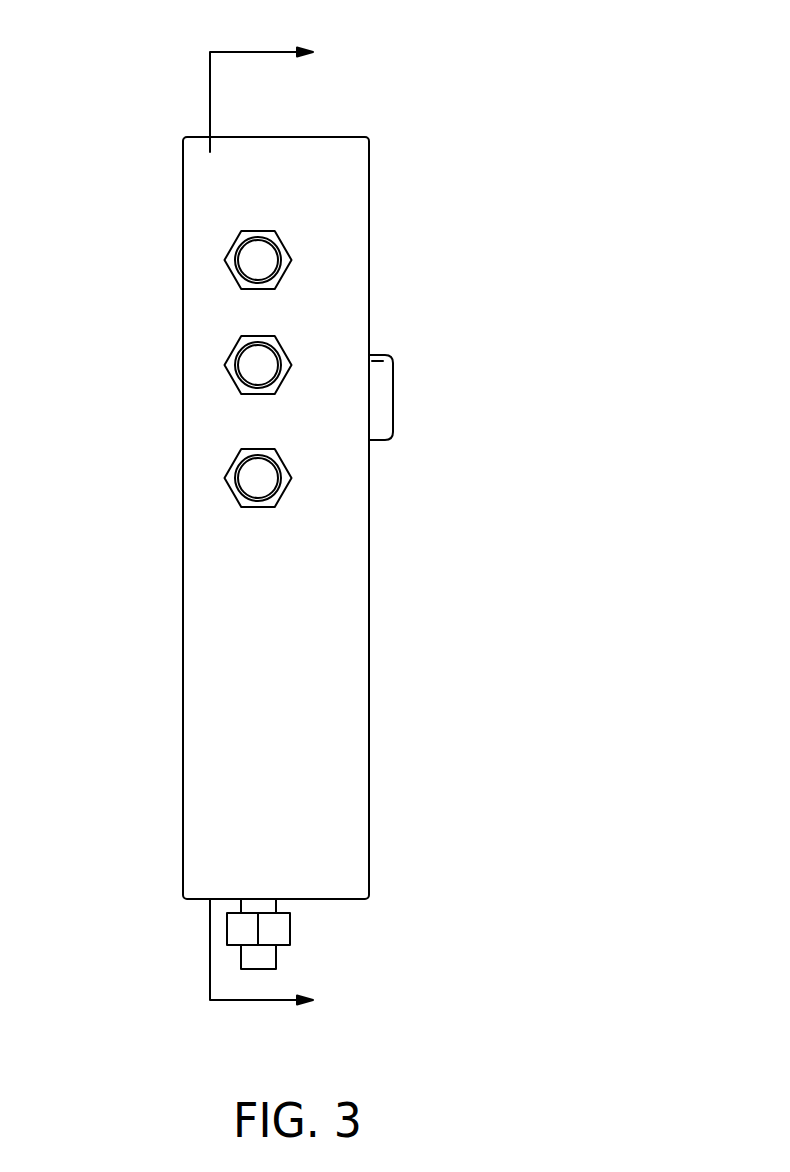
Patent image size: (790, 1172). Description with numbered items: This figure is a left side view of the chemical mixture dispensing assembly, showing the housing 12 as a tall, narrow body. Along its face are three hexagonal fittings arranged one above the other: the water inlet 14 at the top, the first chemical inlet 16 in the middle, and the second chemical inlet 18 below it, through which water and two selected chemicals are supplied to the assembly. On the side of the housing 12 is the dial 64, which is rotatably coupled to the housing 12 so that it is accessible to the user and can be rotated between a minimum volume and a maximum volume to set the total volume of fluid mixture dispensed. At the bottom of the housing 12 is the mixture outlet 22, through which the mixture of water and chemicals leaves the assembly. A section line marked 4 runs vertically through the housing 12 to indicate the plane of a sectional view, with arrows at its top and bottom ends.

The housing 12 is at (338, 137).
The section line 4- 4 is at (279, 526).
The water inlet 14 is at (227, 246).
The first chemical inlet 16 is at (228, 351).
The second chemical inlet 18 is at (228, 462).
The dial 64 is at (393, 399).
The mixture outlet 22 is at (290, 925).